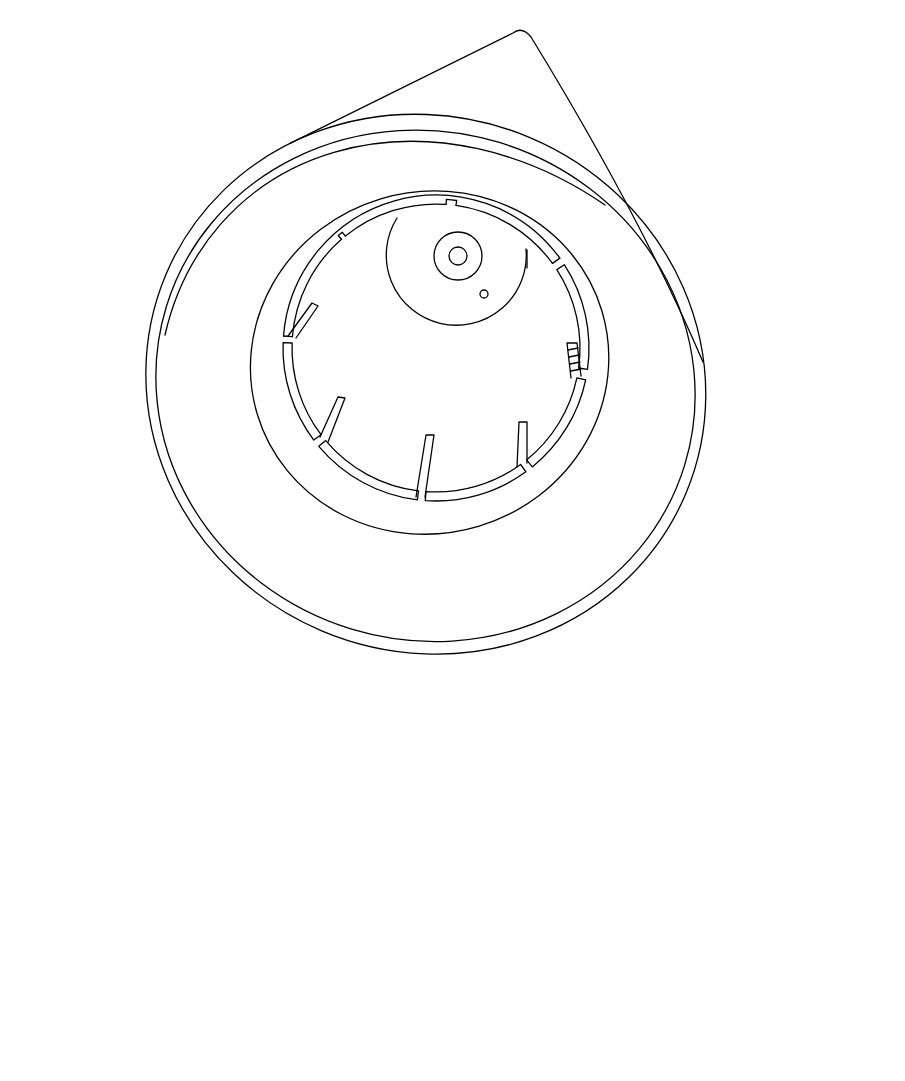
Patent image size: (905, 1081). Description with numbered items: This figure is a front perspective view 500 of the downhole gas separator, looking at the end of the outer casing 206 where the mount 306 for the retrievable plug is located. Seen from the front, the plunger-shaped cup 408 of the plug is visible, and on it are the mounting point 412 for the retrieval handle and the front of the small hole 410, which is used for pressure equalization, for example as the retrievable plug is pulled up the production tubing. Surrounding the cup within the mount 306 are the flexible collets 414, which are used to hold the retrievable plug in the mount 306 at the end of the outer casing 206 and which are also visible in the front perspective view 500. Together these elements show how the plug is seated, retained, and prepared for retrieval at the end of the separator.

The front perspective view 500 is at (471, 887).
The outer casing 206 is at (436, 63).
The mount 306 is at (178, 497).
The plunger-shaped cup 408 is at (387, 270).
The small hole 410 is at (487, 291).
The mounting point 412 is at (440, 248).
The flexible collets 414 is at (287, 393).